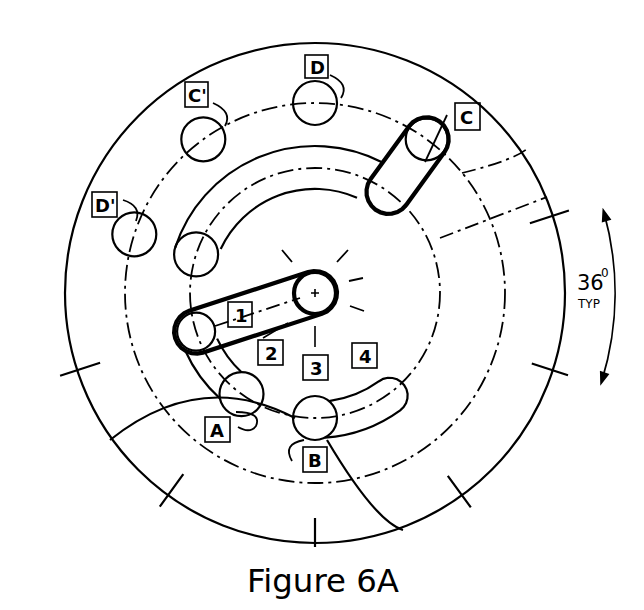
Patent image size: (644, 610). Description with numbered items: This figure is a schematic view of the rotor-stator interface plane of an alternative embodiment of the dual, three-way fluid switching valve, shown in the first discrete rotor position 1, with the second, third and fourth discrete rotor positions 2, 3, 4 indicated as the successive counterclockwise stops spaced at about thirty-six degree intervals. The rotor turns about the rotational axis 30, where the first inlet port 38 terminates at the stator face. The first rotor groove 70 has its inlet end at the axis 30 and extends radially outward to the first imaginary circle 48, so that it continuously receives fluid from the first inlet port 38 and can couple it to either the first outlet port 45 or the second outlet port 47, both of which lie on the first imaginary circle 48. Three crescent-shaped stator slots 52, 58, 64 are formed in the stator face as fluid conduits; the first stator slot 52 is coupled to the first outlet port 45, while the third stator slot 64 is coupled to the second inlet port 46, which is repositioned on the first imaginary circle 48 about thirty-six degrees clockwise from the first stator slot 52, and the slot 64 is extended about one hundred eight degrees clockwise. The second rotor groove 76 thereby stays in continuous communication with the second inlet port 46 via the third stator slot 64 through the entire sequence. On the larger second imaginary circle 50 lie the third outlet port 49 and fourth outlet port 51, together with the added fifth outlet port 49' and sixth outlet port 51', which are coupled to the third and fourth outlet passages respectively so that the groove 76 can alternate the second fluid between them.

The first rotor position 1 is at (459, 95).
The second rotor position 2 is at (315, 52).
The third rotor position 3 is at (190, 122).
The fourth rotor position 4 is at (100, 223).
The rotational axis 30 is at (333, 316).
The first inlet port 38 is at (318, 268).
The first outlet port 45 is at (110, 441).
The second inlet port 46 is at (190, 278).
The second outlet port 47 is at (403, 530).
The first imaginary circle 48 is at (547, 197).
The third outlet port 49 is at (434, 101).
The fifth outlet port 49' is at (151, 118).
The second imaginary circle 50 is at (528, 148).
The fourth outlet port 51 is at (298, 57).
The sixth outlet port 51' is at (76, 239).
The first stator slot 52 is at (208, 376).
The second stator slot 58 is at (355, 421).
The third stator slot 64 is at (363, 166).
The first rotor groove 70 is at (273, 288).
The second rotor groove 76 is at (420, 188).